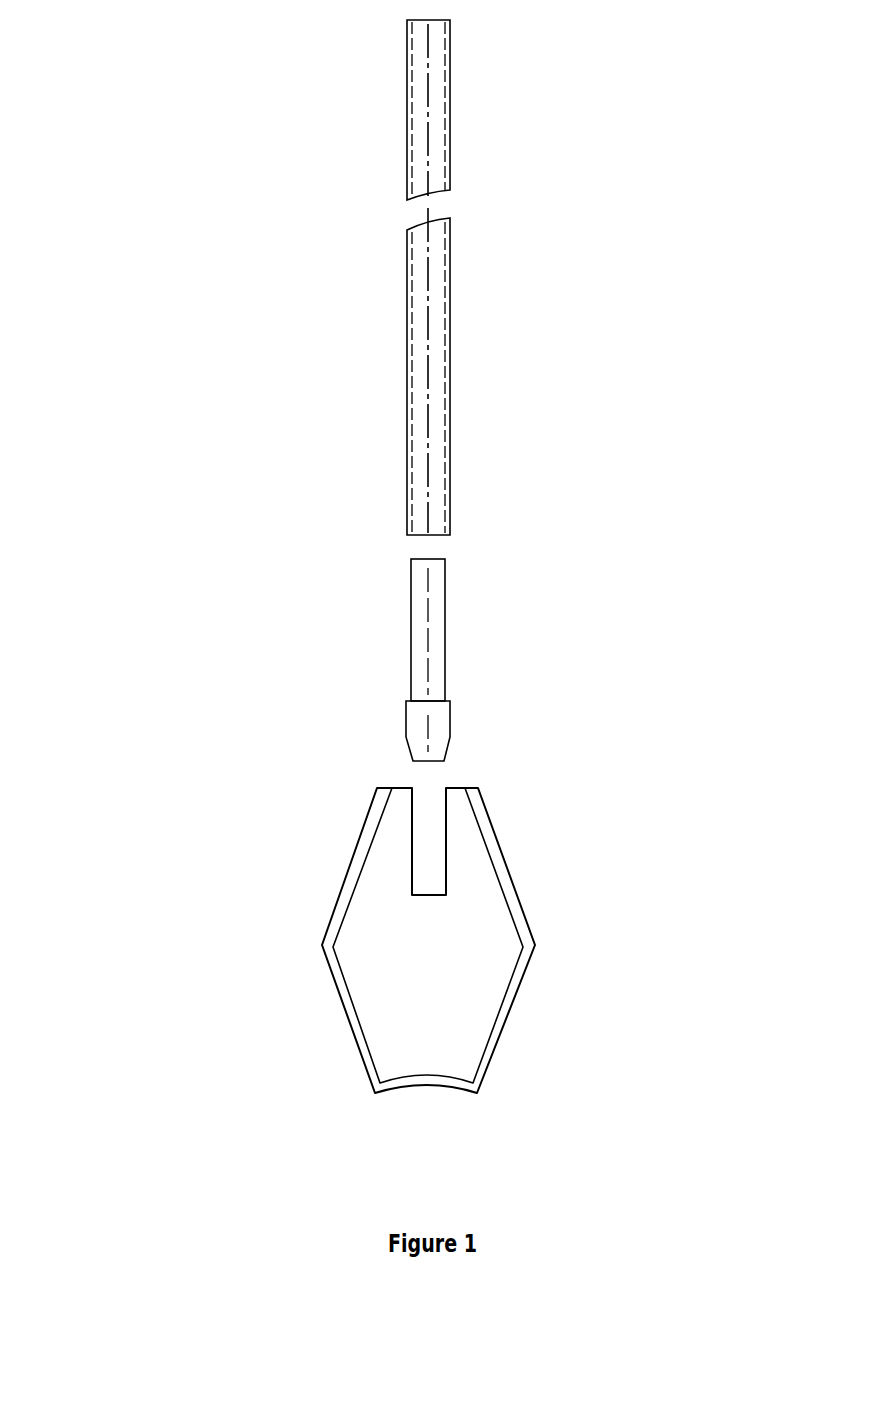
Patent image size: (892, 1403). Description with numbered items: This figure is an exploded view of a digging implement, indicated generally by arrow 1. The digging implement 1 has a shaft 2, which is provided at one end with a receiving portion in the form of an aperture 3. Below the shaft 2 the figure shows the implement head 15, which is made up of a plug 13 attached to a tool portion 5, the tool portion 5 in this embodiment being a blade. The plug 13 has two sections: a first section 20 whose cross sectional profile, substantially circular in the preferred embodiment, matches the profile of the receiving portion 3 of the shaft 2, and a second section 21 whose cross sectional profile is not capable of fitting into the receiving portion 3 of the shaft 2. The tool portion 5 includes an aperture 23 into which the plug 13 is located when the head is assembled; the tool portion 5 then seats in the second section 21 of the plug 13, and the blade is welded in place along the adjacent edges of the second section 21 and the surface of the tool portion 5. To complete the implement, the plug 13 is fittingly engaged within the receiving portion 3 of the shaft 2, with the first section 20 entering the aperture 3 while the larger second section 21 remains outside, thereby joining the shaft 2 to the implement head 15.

The digging implement 1 is at (300, 131).
The shaft 2 is at (450, 352).
The aperture (receiving portion) 3 is at (414, 547).
The tool portion 5 is at (428, 940).
The plug 13 is at (390, 675).
The implement head 15 is at (212, 758).
The first section 20 is at (431, 614).
The second section 21 is at (438, 734).
The aperture 23 is at (430, 850).